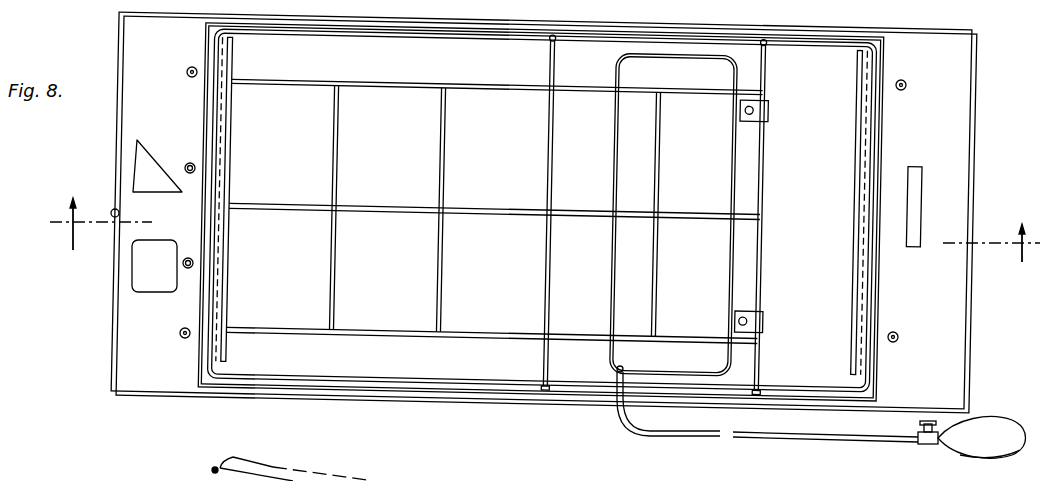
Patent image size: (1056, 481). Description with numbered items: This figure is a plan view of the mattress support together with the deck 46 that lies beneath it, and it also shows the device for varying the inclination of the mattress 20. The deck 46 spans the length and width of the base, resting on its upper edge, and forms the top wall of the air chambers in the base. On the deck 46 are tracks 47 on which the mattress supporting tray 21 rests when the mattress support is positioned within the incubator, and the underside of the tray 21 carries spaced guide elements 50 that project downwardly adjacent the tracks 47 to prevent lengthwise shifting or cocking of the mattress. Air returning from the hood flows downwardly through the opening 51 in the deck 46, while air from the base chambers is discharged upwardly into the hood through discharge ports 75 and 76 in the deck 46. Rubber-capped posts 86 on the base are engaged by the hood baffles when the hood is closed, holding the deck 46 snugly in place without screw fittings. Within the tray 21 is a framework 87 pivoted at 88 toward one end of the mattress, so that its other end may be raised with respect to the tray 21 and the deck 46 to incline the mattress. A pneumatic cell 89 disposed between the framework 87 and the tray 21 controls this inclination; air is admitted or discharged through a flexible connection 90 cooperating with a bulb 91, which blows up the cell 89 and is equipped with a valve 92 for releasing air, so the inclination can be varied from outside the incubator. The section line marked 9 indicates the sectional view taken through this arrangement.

The section line 9- 9 is at (545, 235).
The mattress 20 is at (378, 480).
The mattress supporting tray 21 is at (887, 136).
The deck 46 is at (969, 338).
The tracks 47 is at (232, 270).
The guide elements 50 is at (218, 309).
The opening 51 is at (922, 200).
The discharge port 75 is at (133, 155).
The discharge port 76 is at (131, 272).
The posts 86 is at (188, 68).
The framework 87 is at (370, 328).
The pivot 88 is at (881, 40).
The pneumatic cell 89 is at (612, 275).
The flexible connection 90 is at (792, 436).
The bulb 91 is at (996, 424).
The valve 92 is at (929, 445).